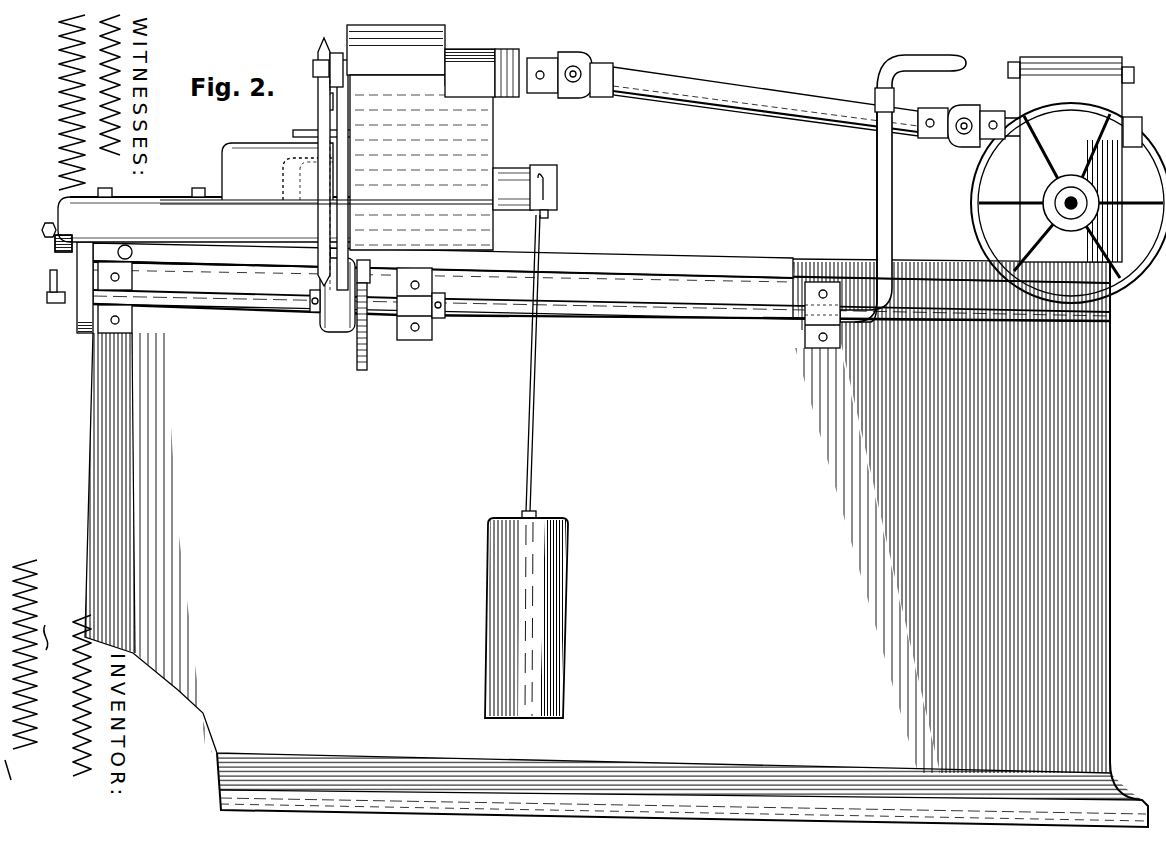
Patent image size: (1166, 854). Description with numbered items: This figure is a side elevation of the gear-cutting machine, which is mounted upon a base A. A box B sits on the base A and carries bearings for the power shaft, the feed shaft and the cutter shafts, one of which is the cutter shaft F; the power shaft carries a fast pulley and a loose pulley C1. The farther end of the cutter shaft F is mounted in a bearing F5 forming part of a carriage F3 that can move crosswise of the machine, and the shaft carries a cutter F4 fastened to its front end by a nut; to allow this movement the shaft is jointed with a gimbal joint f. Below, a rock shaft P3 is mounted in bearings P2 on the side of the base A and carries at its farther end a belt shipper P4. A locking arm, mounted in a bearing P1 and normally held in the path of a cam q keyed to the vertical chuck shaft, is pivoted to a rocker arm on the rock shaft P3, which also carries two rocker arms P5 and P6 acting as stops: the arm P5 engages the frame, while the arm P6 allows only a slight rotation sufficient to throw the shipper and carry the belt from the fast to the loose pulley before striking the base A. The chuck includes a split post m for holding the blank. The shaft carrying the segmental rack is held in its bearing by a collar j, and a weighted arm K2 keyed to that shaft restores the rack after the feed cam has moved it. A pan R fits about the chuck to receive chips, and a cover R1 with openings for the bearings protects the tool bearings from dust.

The base A is at (616, 543).
The box B is at (1135, 66).
The loose pulley C1 is at (986, 185).
The cutter shaft F is at (1133, 115).
The gimbal joint f is at (541, 95).
The belt shipper P4 is at (882, 72).
The rock shaft P3 is at (662, 312).
The rocker arm P5 is at (367, 257).
The bearing P1 is at (211, 254).
The bearing P2 is at (132, 318).
The rocker arm P6 is at (358, 365).
The pan R is at (222, 143).
The cam q is at (268, 130).
The split post m is at (318, 102).
The cutter F4 is at (316, 52).
The cover R1 is at (396, 50).
The carriage F3 is at (327, 162).
The bearing F5 is at (508, 55).
The collar j is at (545, 162).
The weighted arm K2 is at (590, 204).